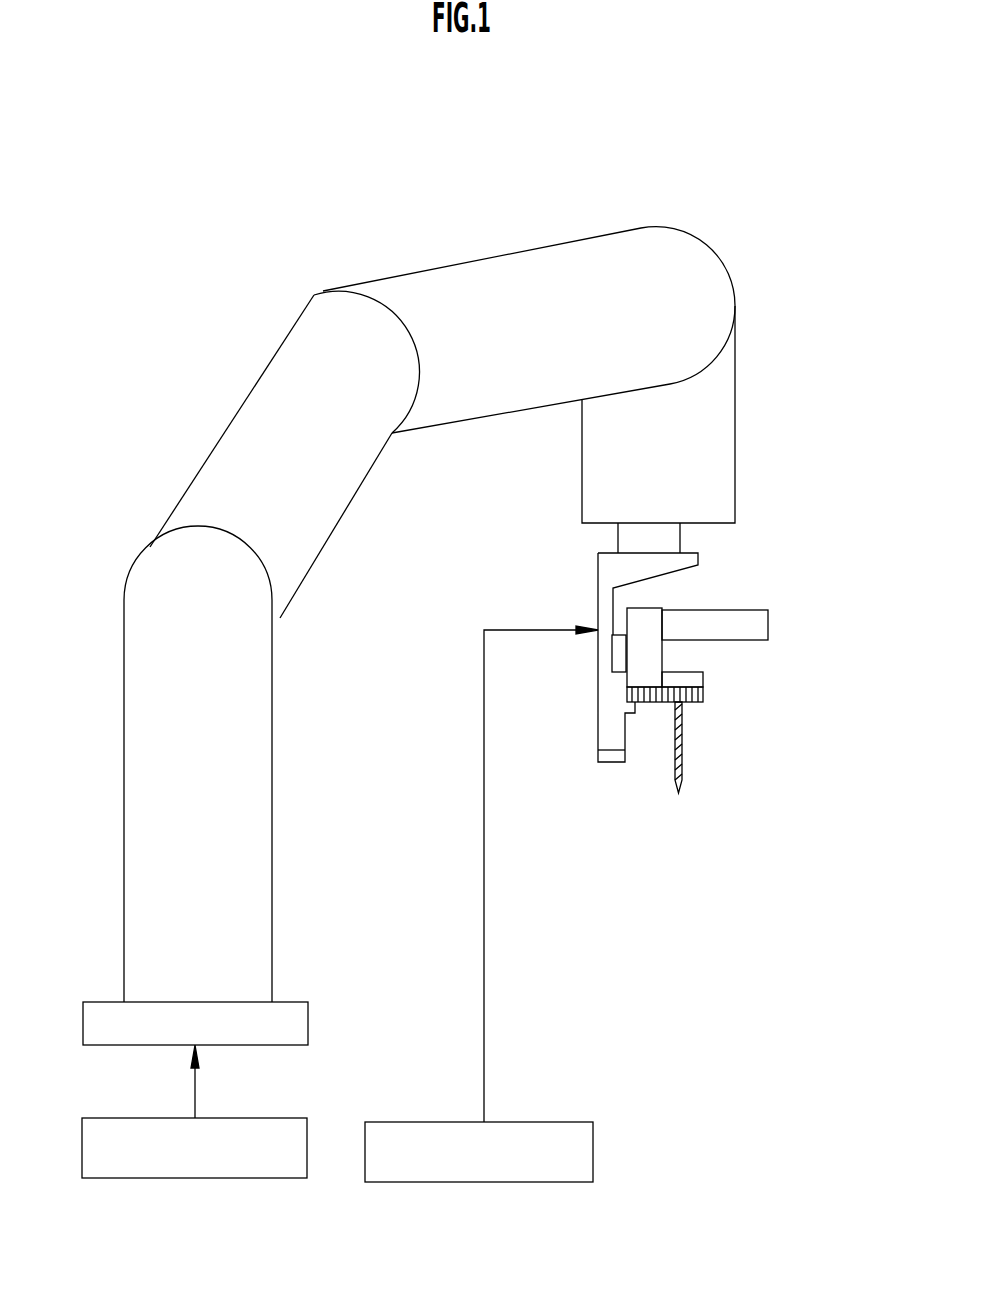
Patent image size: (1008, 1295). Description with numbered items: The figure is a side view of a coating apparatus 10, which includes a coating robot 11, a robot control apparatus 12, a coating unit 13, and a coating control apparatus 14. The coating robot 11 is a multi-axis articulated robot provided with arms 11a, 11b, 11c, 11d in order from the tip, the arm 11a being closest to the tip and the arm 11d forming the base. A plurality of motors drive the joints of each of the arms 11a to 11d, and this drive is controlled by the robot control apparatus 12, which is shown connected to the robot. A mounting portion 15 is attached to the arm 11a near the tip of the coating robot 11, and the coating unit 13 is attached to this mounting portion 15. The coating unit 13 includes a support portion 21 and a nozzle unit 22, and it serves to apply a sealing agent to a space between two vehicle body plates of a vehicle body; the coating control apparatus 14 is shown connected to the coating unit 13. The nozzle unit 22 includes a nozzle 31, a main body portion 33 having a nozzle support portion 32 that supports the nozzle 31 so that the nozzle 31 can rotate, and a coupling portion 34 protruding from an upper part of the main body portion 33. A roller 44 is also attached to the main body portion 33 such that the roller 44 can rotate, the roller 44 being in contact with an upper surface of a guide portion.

The coating apparatus 10 is at (663, 173).
The coating robot 11 is at (336, 254).
The arm 11a is at (695, 452).
The arm 11b is at (523, 290).
The arm 11c is at (243, 417).
The arm 11d is at (148, 738).
The robot control apparatus 12 is at (308, 1147).
The coating unit 13 is at (794, 563).
The coating control apparatus 14 is at (593, 1150).
The mounting portion 15 is at (676, 542).
The support portion 21 is at (573, 583).
The nozzle unit 22 is at (738, 716).
The nozzle 31 is at (683, 752).
The nozzle support portion 32 is at (697, 681).
The main body portion 33 is at (640, 625).
The coupling portion 34 is at (762, 626).
The roller 44 is at (618, 656).